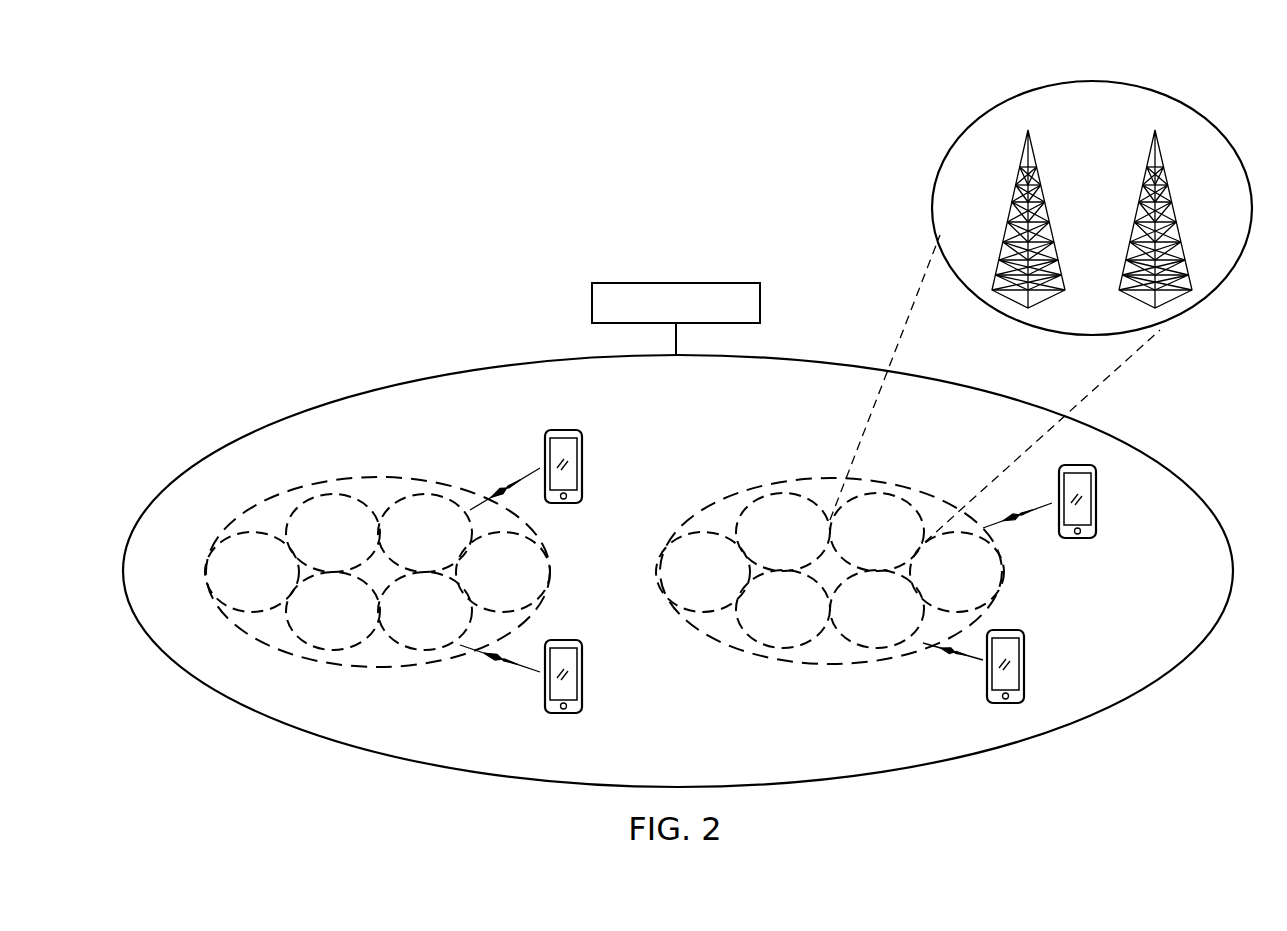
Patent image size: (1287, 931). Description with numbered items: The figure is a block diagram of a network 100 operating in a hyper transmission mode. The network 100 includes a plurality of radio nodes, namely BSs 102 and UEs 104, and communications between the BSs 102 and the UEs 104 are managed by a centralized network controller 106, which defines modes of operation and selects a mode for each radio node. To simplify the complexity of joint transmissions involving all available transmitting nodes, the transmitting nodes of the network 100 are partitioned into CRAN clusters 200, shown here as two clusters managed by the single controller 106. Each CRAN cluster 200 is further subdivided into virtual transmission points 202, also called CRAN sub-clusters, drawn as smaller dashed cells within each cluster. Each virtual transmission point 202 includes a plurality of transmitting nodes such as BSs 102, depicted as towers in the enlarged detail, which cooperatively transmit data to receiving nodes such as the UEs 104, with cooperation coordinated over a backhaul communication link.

The network 100 is at (372, 386).
The BS 102 is at (1050, 220).
The UE 104 is at (585, 452).
The centralized network controller 106 is at (592, 303).
The CRAN cluster 200 is at (317, 482).
The virtual transmission point 202 is at (237, 610).